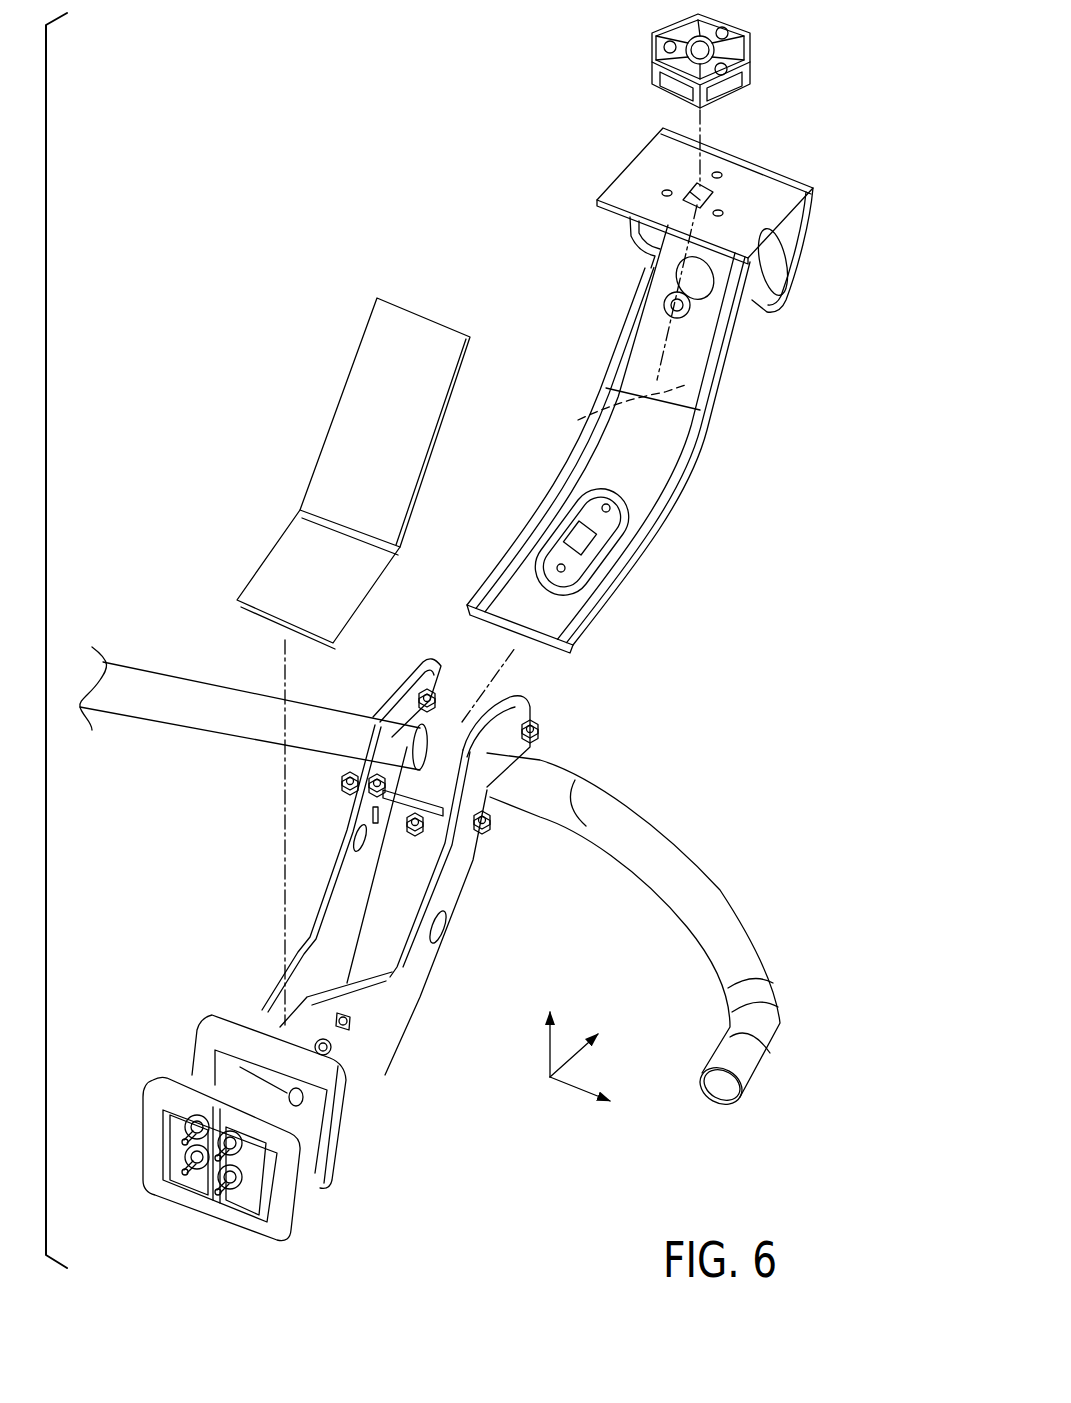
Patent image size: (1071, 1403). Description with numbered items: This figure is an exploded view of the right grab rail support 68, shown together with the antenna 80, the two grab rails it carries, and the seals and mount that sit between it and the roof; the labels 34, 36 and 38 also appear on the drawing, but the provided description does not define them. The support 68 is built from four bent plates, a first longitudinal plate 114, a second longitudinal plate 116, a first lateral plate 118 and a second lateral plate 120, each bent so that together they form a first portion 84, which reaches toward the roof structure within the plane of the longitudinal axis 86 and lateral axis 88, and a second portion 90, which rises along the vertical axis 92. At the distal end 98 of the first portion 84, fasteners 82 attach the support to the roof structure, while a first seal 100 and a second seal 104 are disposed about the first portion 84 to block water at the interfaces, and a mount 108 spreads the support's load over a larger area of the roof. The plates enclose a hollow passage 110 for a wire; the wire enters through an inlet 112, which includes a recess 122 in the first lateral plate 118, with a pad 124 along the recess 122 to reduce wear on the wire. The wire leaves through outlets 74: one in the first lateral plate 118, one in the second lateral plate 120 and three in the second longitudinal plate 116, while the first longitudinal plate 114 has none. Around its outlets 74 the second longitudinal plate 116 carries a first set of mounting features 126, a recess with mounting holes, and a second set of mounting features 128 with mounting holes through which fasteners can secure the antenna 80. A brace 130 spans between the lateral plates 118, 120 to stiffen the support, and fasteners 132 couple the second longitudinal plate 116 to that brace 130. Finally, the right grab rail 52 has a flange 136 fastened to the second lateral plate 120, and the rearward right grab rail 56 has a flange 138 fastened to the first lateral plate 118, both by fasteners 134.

The pedal assembly 34 is at (512, 181).
The tube member 36 is at (450, 879).
The bracket 38 is at (608, 435).
The right grab rail 52 is at (254, 709).
The rearward right grab rail 56 is at (633, 932).
The right grab rail support 68 is at (603, 251).
The outlets 74 is at (712, 192).
The antenna 80 is at (742, 50).
The fasteners 82 is at (185, 1147).
The first portion 84 is at (272, 967).
The longitudinal axis 86 is at (577, 1083).
The lateral axis 88 is at (565, 1057).
The second portion 90 is at (326, 801).
The vertical axis 92 is at (563, 1043).
The distal end 98 is at (159, 1208).
The first seal 100 is at (203, 1037).
The second seal 104 is at (273, 1232).
The mount 108 is at (257, 1183).
The hollow passage 110 is at (270, 1095).
The inlet 112 is at (229, 1081).
The first longitudinal plate 114 is at (349, 411).
The second longitudinal plate 116 is at (552, 481).
The first lateral plate 118 is at (364, 900).
The second lateral plate 120 is at (312, 914).
The recess 122 is at (316, 1161).
The pad 124 is at (307, 1133).
The first set of mounting features 126 is at (638, 581).
The second set of mounting features 128 is at (743, 147).
The brace 130 is at (393, 830).
The fasteners 132 is at (423, 833).
The fasteners 134 is at (404, 686).
The flange 136 is at (415, 675).
The flange 138 is at (527, 713).